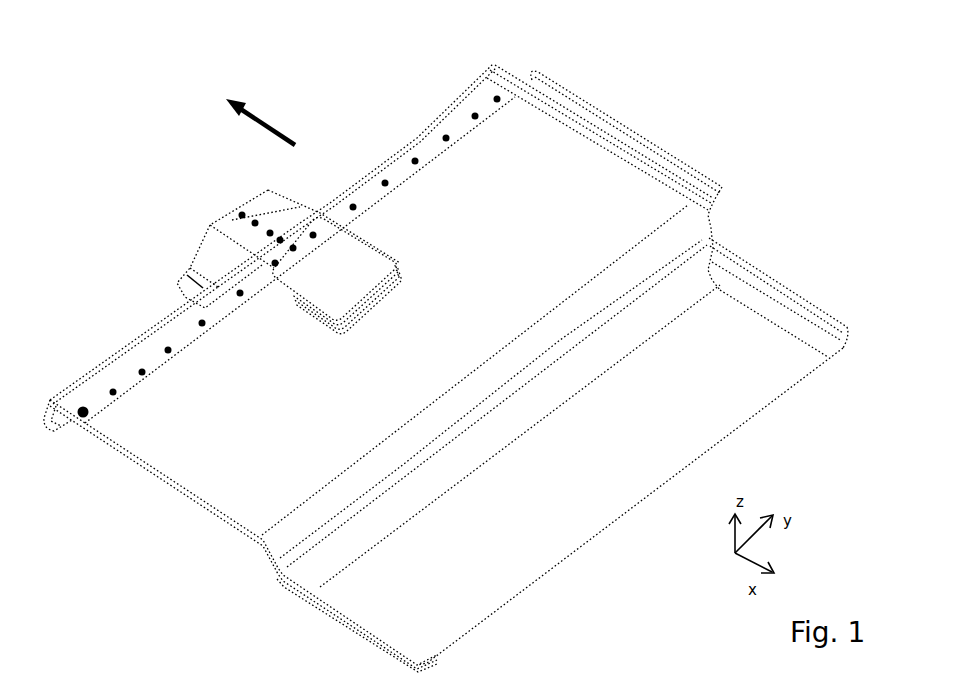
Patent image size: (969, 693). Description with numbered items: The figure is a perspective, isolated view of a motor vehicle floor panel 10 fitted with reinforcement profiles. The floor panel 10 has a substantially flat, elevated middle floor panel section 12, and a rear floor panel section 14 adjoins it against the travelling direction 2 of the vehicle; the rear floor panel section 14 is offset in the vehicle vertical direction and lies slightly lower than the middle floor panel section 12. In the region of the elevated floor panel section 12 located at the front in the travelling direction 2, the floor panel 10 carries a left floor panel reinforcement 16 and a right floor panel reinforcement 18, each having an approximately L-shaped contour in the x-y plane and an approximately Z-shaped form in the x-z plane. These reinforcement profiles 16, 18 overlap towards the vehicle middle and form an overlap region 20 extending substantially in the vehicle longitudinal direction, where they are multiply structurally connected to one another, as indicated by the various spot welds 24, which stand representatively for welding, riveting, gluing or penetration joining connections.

The travelling direction 2 is at (268, 122).
The floor panel 10 is at (693, 96).
The floor panel section 12 is at (600, 168).
The rear floor panel section 14 is at (776, 343).
The left floor panel reinforcement 16 is at (148, 343).
The right floor panel reinforcement 18 is at (362, 193).
The overlap region 20 is at (302, 194).
The spot welds 24 is at (445, 137).